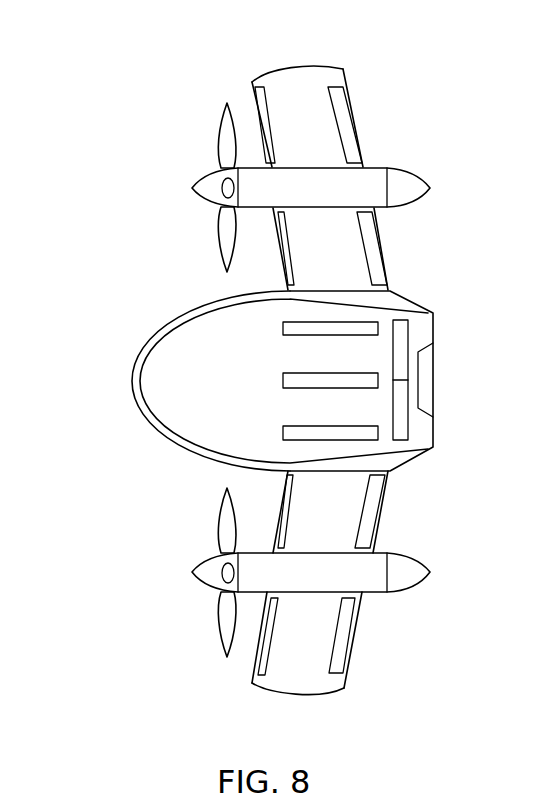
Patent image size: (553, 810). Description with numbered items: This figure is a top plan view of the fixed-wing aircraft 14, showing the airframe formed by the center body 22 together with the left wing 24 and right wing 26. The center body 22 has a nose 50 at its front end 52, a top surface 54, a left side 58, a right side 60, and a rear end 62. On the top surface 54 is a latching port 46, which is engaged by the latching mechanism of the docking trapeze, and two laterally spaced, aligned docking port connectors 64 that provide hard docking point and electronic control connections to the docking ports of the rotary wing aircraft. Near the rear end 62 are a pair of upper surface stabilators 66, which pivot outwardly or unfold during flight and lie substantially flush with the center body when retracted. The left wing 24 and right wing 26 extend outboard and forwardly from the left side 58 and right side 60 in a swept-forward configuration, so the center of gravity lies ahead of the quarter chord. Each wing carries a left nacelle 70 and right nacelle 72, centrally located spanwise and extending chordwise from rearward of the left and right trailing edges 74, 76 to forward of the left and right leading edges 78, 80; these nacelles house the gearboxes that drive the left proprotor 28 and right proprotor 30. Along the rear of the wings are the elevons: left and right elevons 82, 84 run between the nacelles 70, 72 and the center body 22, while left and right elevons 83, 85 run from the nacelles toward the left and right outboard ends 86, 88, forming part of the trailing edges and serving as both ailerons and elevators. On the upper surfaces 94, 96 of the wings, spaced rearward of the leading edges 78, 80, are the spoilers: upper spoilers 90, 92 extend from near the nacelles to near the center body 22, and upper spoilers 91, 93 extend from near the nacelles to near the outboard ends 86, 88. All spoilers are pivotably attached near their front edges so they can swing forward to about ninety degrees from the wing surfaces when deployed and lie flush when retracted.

The fixed-wing aircraft 14 is at (120, 150).
The center body 22 is at (279, 381).
The left wing 24 is at (308, 670).
The right wing 26 is at (298, 93).
The left proprotor 28 is at (200, 571).
The right proprotor 30 is at (200, 186).
The latching port 46 is at (283, 378).
The nose 50 is at (143, 352).
The front end 52 is at (115, 370).
The top surface 54 is at (193, 413).
The left side 58 is at (340, 512).
The right side 60 is at (262, 288).
The rear end 62 is at (447, 370).
The docking port connector 64 is at (283, 325).
The upper surface stabilators 66 is at (402, 343).
The left nacelle 70 is at (360, 177).
The right nacelle 72 is at (363, 583).
The left trailing edge 74 is at (339, 249).
The right trailing edge 76 is at (360, 622).
The left leading edge 78 is at (255, 667).
The right leading edge 80 is at (252, 83).
The left elevon 82 is at (377, 497).
The left elevon 83 is at (342, 653).
The right elevon 84 is at (372, 238).
The right elevon 85 is at (350, 120).
The left outboard end 86 is at (290, 697).
The right outboard end 88 is at (277, 64).
The left spoiler 90 is at (287, 510).
The left spoiler 91 is at (262, 640).
The right spoiler 92 is at (287, 250).
The right spoiler 93 is at (263, 120).
The upper surface 94 is at (280, 680).
The upper surface 96 is at (310, 82).